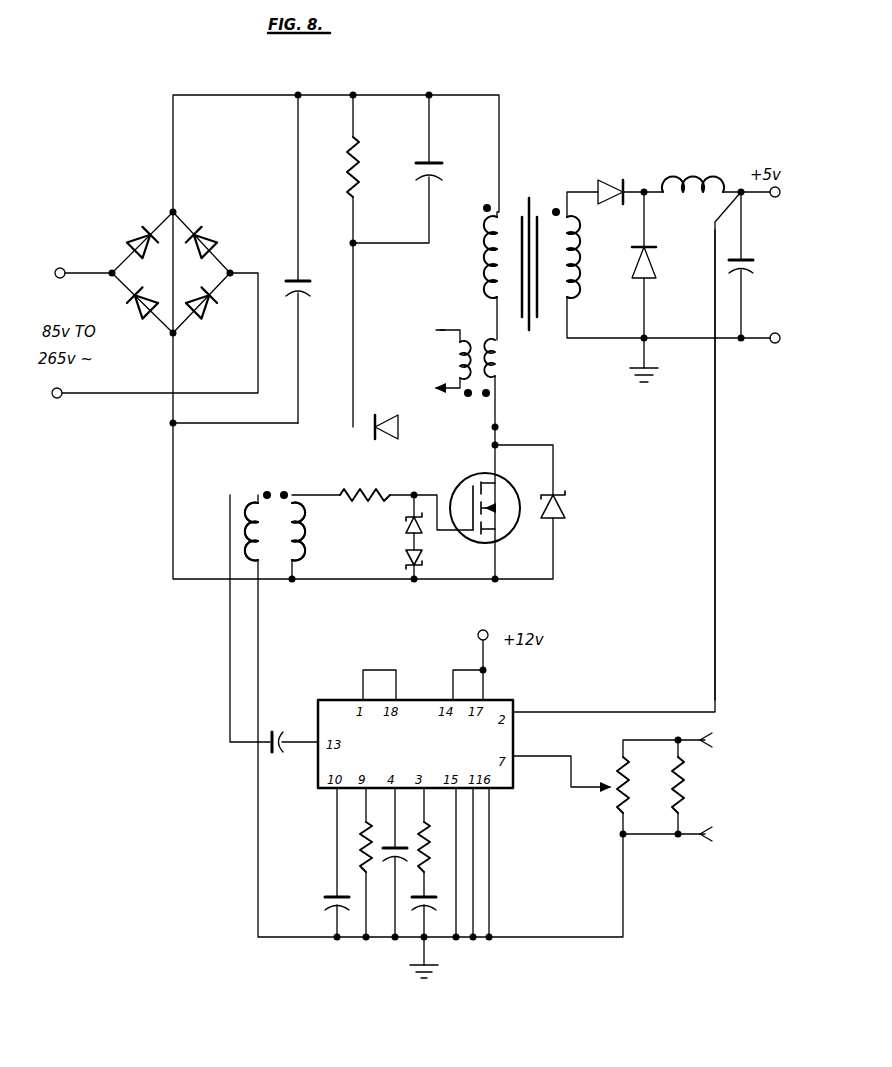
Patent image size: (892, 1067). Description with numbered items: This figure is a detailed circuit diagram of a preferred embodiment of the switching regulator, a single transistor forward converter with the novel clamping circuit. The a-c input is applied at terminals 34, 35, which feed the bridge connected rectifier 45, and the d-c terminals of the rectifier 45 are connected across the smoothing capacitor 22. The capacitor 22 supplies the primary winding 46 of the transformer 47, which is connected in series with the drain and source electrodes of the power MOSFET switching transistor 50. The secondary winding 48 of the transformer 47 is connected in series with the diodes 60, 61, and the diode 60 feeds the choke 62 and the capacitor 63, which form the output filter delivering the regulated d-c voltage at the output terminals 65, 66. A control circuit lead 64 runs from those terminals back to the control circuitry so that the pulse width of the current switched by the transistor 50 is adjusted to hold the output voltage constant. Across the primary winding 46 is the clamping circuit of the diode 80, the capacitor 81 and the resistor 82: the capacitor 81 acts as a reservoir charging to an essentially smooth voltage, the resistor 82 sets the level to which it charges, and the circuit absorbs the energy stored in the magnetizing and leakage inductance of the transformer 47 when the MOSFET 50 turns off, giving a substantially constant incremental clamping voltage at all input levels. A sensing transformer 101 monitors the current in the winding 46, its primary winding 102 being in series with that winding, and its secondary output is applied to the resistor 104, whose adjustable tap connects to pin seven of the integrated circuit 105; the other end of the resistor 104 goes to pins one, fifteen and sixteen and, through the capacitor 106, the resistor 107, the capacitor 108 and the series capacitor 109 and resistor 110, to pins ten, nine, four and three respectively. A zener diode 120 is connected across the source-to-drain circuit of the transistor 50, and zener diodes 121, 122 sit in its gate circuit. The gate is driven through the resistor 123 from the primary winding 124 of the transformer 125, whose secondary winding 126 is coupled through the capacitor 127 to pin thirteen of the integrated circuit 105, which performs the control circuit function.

The smoothing capacitor 22 is at (289, 280).
The input terminal 34 is at (73, 252).
The input terminal 35 is at (55, 402).
The bridge connected rectifier 45 is at (177, 237).
The primary winding 46 is at (488, 255).
The transformer 47 is at (550, 182).
The secondary winding 48 is at (578, 277).
The power MOSFET switching transistor 50 is at (470, 476).
The diode 60 is at (608, 179).
The diode 61 is at (650, 281).
The choke 62 is at (697, 181).
The capacitor 63 is at (756, 269).
The control circuit lead 64 is at (718, 588).
The output d-c voltage terminal 65 is at (777, 200).
The output d-c voltage terminal 66 is at (776, 350).
The diode 80 is at (396, 415).
The capacitor 81 is at (415, 180).
The resistor 82 is at (366, 178).
The sensing transformer 101 is at (478, 330).
The primary winding 102 is at (500, 364).
The resistor 104 is at (614, 811).
The integrated circuit 105 is at (498, 700).
The capacitor 106 is at (330, 897).
The resistor 107 is at (360, 848).
The capacitor 108 is at (392, 864).
The capacitor 109 is at (440, 898).
The resistor 110 is at (431, 848).
The zener diode 120 is at (566, 508).
The zener diode 121 is at (406, 520).
The zener diode 122 is at (404, 557).
The resistor 123 is at (378, 491).
The primary winding 124 is at (305, 537).
The transformer 125 is at (279, 476).
The secondary winding 126 is at (251, 536).
The capacitor 127 is at (291, 745).